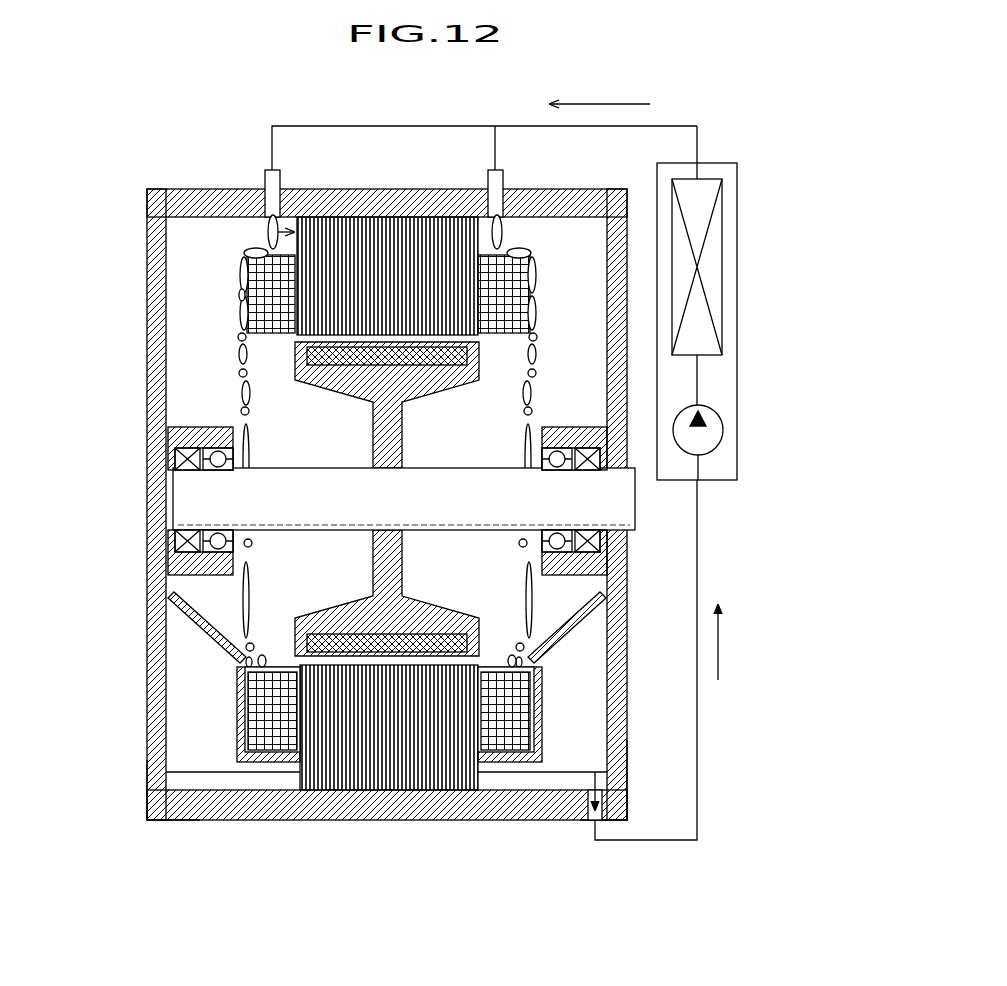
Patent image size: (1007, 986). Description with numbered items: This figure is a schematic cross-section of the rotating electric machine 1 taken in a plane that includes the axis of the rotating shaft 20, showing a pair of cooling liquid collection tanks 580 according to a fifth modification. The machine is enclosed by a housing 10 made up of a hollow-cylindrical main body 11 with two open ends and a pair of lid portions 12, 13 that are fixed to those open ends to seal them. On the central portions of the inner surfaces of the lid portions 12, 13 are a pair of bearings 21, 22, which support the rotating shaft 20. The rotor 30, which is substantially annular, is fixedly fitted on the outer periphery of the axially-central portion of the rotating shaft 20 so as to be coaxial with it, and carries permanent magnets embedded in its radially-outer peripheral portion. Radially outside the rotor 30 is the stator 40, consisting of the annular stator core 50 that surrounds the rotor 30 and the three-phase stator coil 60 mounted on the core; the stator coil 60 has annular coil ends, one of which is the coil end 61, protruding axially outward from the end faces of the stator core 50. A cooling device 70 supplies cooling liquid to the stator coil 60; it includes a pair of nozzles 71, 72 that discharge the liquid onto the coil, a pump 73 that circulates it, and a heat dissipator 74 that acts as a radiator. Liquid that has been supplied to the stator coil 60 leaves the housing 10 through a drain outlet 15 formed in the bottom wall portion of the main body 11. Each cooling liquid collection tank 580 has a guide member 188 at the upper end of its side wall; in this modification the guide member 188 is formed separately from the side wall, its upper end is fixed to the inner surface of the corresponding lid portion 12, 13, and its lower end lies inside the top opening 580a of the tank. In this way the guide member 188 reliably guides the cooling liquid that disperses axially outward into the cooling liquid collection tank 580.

The rotating electric machine 1 is at (170, 137).
The housing 10 is at (369, 528).
The main body 11 is at (385, 821).
The lid portion 12 is at (146, 800).
The lid portion 13 is at (632, 765).
The drain outlet 15 is at (590, 822).
The rotating shaft 20 is at (192, 503).
The bearing 21 is at (212, 578).
The bearing 22 is at (585, 580).
The rotor 30 is at (296, 376).
The stator 40 is at (272, 503).
The stator core 50 is at (292, 232).
The stator coil 60 is at (240, 283).
The coil end 61 is at (246, 300).
The cooling device 70 is at (743, 303).
The nozzle 71 is at (264, 180).
The nozzle 72 is at (504, 180).
The pump 73 is at (724, 432).
The heat dissipator 74 is at (723, 243).
The guide member 188 is at (200, 606).
The cooling liquid collection tank 580 is at (236, 702).
The top opening 580a is at (264, 657).